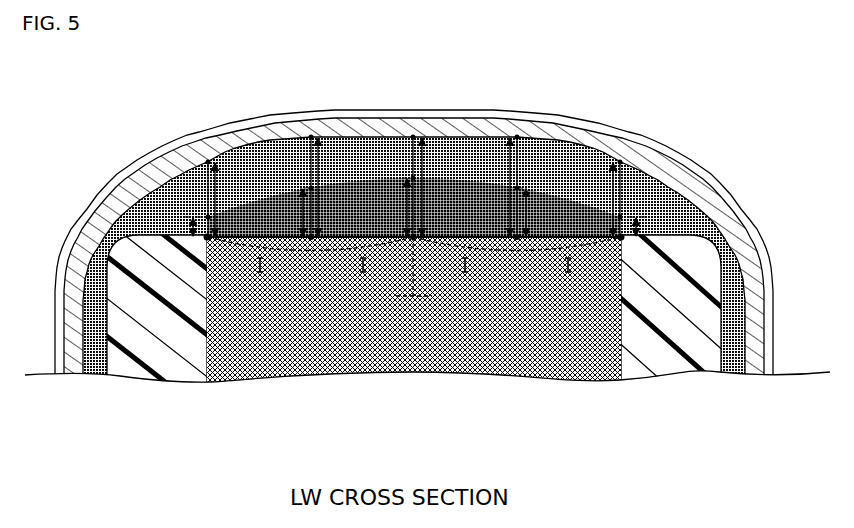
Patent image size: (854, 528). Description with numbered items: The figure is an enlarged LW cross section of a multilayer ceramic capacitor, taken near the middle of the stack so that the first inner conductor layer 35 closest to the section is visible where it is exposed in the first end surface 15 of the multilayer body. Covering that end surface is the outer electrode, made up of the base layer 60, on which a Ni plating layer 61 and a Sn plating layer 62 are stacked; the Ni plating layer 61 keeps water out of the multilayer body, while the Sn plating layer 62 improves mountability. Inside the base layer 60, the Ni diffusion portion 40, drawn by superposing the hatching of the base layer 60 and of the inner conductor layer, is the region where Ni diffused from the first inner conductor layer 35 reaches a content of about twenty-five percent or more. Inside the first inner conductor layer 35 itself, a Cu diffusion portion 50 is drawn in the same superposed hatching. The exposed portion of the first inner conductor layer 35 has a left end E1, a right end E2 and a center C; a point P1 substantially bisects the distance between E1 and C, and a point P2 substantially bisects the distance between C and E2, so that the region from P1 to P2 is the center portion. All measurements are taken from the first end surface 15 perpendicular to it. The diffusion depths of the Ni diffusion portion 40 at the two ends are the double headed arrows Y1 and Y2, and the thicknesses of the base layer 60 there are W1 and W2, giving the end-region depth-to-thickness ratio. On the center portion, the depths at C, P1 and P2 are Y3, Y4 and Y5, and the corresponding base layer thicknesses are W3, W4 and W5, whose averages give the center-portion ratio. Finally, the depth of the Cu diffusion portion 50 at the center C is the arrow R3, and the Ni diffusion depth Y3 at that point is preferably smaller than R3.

The first end surface 15 is at (176, 236).
The first inner conductor layer 35 is at (598, 350).
The Ni diffusion portion 40 is at (460, 130).
The Cu diffusion portion 50 is at (270, 315).
The base layer 60 is at (658, 200).
The Ni plating layer 61 is at (698, 198).
The Sn plating layer 62 is at (746, 236).
The base layer thickness at left end W1 is at (216, 168).
The base layer thickness at right end W2 is at (612, 168).
The base layer thickness at center W3 is at (423, 169).
The base layer thickness at point P1 W4 is at (319, 169).
The base layer thickness at point P2 W5 is at (509, 169).
The Ni diffusion depth at left end Y1 is at (192, 212).
The Ni diffusion depth at right end Y2 is at (637, 212).
The Ni diffusion depth at center Y3 is at (406, 187).
The Ni diffusion depth at point P1 Y4 is at (302, 197).
The Ni diffusion depth at point P2 Y5 is at (527, 195).
The left end E1 is at (207, 238).
The right end E2 is at (622, 238).
The point P1 is at (297, 255).
The point P2 is at (528, 255).
The center C is at (411, 243).
The Cu diffusion depth at center R3 is at (428, 298).